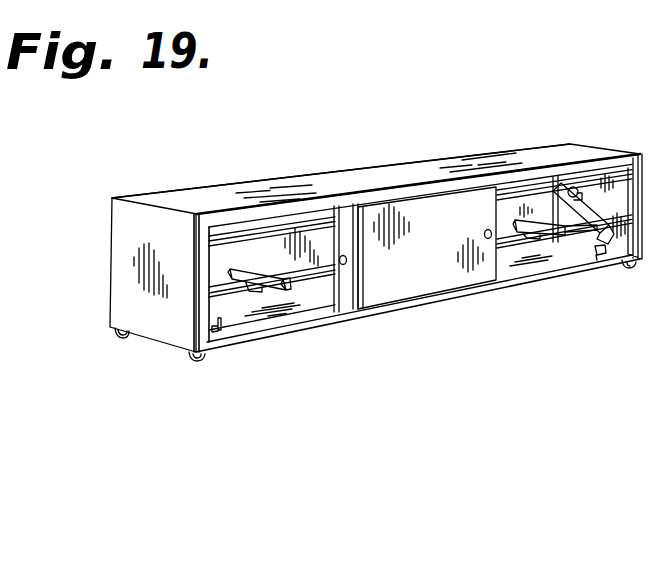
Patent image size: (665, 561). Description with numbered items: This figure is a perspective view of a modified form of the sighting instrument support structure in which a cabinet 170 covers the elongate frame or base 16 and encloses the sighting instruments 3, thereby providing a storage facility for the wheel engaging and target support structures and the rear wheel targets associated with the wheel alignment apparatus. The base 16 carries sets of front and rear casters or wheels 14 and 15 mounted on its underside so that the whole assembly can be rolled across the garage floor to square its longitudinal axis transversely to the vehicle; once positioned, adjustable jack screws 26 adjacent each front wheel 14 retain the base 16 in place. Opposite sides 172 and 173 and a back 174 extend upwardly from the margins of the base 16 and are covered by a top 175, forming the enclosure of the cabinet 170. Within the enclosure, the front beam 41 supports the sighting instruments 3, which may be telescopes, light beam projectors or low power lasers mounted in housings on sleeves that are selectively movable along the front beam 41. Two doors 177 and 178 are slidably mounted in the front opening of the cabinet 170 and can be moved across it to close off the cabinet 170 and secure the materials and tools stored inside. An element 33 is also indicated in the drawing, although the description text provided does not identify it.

The cabinet 170 is at (556, 150).
The side 172 is at (130, 300).
The side 173 is at (640, 163).
The back 174 is at (238, 230).
The top 175 is at (424, 170).
The door 177 is at (345, 212).
The door 178 is at (487, 198).
The support shelf 33 is at (300, 232).
The front beam 41 is at (333, 338).
The sighting instrument 3 is at (252, 270).
The adjustable jack screw 26 is at (220, 328).
The front caster 14 is at (203, 360).
The rear caster 15 is at (123, 338).
The frame or base 16 is at (447, 300).